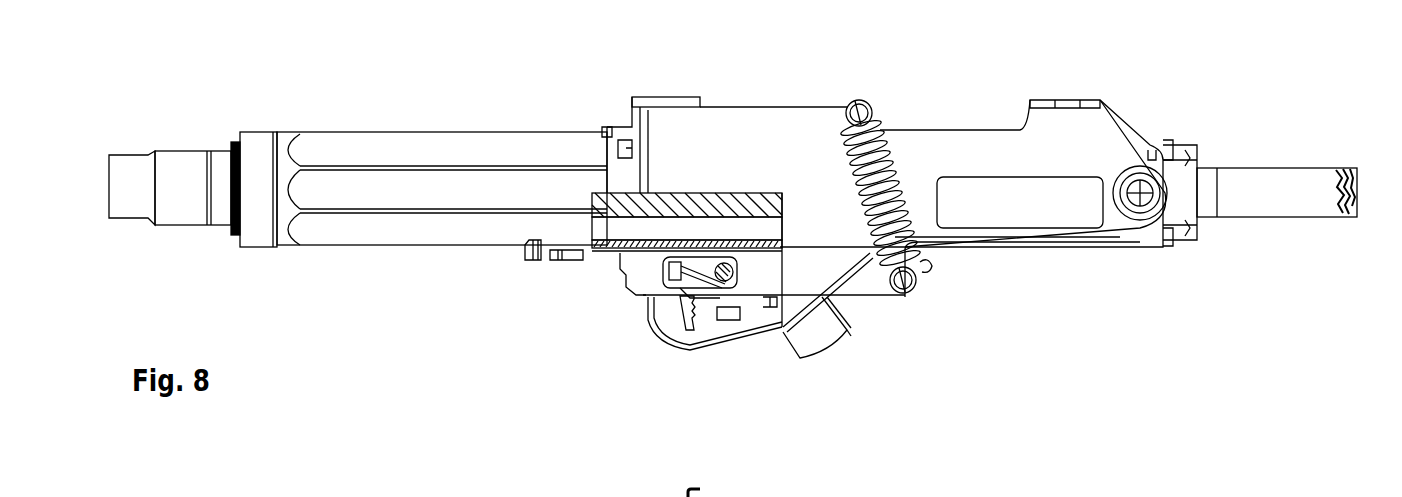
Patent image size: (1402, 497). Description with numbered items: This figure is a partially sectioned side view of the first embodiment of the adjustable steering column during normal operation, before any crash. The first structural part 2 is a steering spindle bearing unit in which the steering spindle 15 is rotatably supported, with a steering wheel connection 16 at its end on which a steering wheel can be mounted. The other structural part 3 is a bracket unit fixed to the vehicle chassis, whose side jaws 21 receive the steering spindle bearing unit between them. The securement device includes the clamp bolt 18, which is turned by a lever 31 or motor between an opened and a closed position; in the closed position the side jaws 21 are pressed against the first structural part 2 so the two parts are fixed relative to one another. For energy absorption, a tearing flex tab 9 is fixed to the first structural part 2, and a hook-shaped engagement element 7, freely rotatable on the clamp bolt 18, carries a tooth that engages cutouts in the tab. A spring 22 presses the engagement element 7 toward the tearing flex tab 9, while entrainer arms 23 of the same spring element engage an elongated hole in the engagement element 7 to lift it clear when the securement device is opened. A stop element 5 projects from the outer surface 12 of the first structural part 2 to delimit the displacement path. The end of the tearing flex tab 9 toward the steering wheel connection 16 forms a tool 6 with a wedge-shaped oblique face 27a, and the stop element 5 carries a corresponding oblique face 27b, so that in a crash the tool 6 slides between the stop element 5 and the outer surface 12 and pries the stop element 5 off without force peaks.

The first structural part 2 is at (328, 147).
The other structural part 3 is at (745, 128).
The stop element 5 is at (567, 253).
The tool 6 is at (616, 257).
The hook-shaped engagement element 7 is at (688, 312).
The tearing flex tab 9 is at (652, 258).
The outer surface 12 is at (512, 254).
The steering spindle 15 is at (222, 218).
The steering wheel connection 16 is at (160, 166).
The clamp bolt 18 is at (820, 326).
The side jaws 21 is at (663, 175).
The spring 22 is at (700, 292).
The entrainer arms 23 is at (733, 300).
The oblique face 27a is at (592, 251).
The oblique face 27b is at (588, 246).
The lever 31 is at (852, 337).